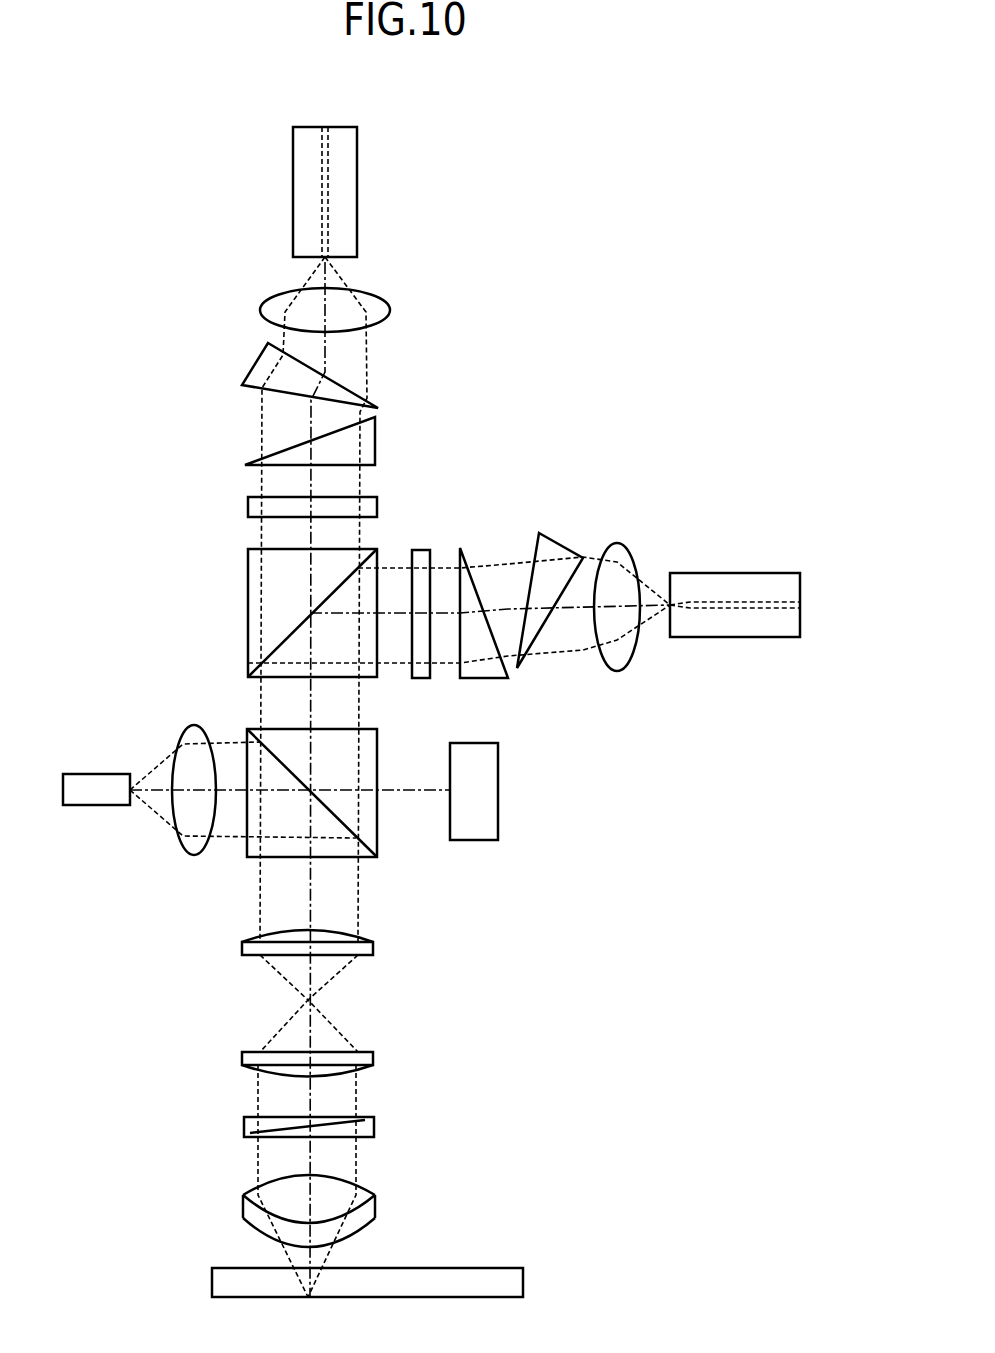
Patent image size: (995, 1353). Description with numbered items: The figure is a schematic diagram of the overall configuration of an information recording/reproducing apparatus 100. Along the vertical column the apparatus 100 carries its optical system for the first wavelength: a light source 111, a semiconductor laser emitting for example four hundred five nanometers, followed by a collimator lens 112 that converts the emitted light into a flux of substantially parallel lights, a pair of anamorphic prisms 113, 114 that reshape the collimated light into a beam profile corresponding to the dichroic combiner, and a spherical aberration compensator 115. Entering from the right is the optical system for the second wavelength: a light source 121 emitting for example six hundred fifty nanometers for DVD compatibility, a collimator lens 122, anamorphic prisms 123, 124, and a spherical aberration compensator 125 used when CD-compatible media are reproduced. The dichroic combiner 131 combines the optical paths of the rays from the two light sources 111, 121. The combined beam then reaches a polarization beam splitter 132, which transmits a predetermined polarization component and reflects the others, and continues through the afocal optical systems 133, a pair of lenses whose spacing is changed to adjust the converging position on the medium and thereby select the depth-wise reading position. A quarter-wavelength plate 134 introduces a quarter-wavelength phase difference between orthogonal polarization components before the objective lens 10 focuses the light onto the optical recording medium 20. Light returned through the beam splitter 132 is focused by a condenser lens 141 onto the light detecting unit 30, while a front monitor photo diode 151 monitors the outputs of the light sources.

The information recording/reproducing apparatus 100 is at (588, 211).
The light source 111 is at (293, 205).
The collimator lens 112 is at (262, 306).
The anamorphic prism 113 is at (252, 371).
The anamorphic prism 114 is at (250, 462).
The spherical aberration compensator 115 is at (248, 512).
The light source 121 is at (735, 573).
The collimator lens 122 is at (617, 543).
The anamorphic prism 123 is at (567, 542).
The anamorphic prism 124 is at (465, 560).
The spherical aberration compensator 125 is at (418, 550).
The dichroic combiner 131 is at (248, 590).
The polarization beam splitter 132 is at (265, 729).
The afocal optical systems 133 is at (242, 948).
The quarter-wavelength plate 134 is at (244, 1122).
The condenser lens 141 is at (178, 840).
The front monitor photo diode 151 is at (472, 840).
The light detecting unit 30 is at (100, 805).
The objective lens 10 is at (243, 1218).
The optical recording medium 20 is at (212, 1285).